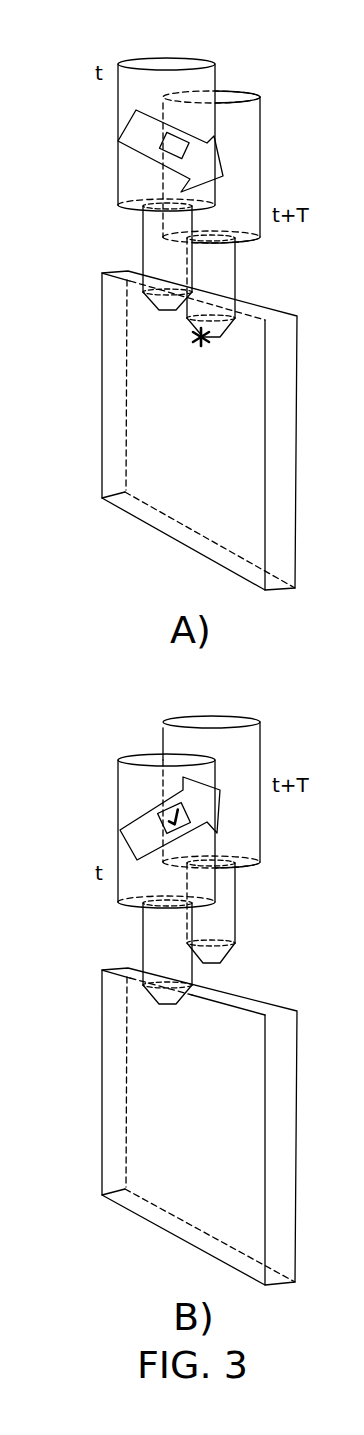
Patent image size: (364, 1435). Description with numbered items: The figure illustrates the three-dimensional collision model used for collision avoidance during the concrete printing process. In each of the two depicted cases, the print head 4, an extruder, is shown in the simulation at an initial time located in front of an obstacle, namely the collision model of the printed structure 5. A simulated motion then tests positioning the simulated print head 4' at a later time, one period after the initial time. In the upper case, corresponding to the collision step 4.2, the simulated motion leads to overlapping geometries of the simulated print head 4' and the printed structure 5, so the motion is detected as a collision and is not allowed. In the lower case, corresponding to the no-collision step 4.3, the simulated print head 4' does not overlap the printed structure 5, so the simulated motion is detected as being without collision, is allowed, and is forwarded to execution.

The print head 4 is at (140, 504).
The simulated print head 4' is at (240, 499).
The collision step 4.2 is at (122, 122).
The no-collision step 4.3 is at (122, 847).
The printed structure 5 is at (100, 390).